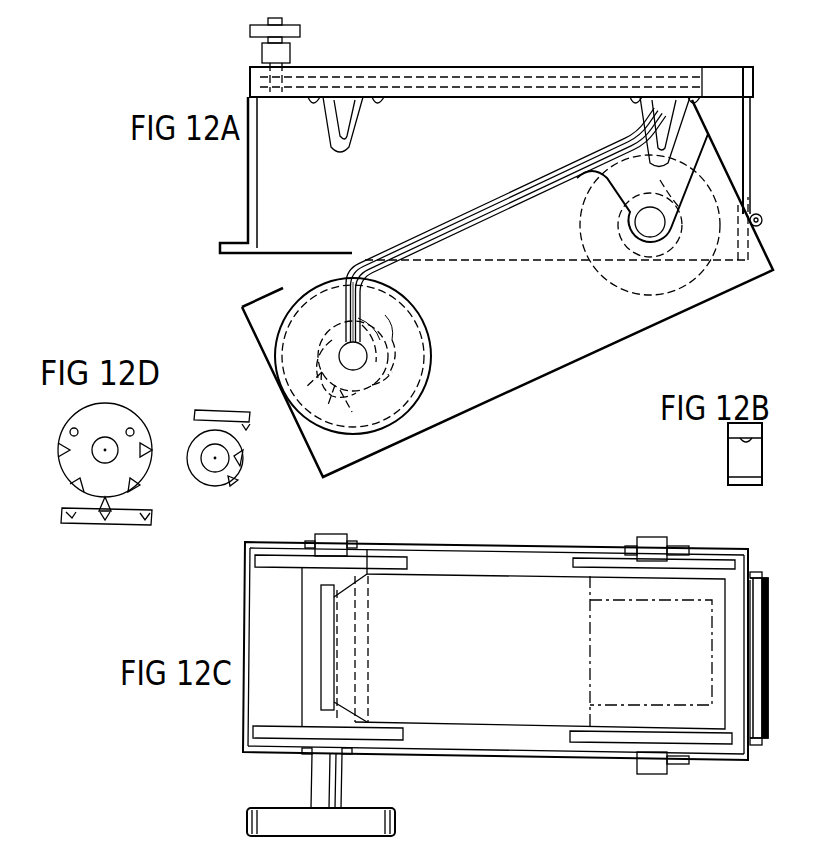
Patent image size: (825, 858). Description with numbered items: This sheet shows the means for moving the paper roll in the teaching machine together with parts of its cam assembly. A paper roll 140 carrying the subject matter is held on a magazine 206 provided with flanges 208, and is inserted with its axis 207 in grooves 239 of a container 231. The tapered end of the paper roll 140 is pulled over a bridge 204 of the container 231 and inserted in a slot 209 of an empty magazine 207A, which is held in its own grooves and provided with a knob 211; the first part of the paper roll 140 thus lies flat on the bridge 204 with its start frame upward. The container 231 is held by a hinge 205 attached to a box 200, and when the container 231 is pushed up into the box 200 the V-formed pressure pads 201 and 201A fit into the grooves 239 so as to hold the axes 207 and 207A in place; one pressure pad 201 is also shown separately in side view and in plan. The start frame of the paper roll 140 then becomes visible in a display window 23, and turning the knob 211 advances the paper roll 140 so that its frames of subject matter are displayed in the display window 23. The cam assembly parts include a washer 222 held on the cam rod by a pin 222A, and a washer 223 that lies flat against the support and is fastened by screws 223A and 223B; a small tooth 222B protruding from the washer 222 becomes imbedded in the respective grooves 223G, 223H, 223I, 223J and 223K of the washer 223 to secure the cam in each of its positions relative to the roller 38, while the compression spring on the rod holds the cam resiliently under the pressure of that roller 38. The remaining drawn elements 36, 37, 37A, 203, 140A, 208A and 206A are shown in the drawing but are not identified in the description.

In FIG. 12A, the upper beam 36 is at (400, 78).
In FIG. 12A, the display window 23 is at (652, 80).
In FIG. 12A, the box 200 is at (247, 203).
In FIG. 12A, the screw head 37 is at (282, 20).
In FIG. 12A, the roller 38 is at (292, 34).
In FIG. 12A, the screw nut 37A is at (290, 53).
In FIG. 12A, the pressure pad 201 is at (356, 152).
In FIG. 12B, the pressure pad 201 is at (728, 465).
In FIG. 12A, the pressure pad 201A is at (637, 112).
In FIG. 12A, the bracket lug 203 is at (384, 104).
In FIG. 12B, the bracket lug 203 is at (738, 445).
In FIG. 12A, the paper roll 140 is at (492, 208).
In FIG. 12C, the paper roll 140 is at (526, 576).
In FIG. 12A, the tube lower end 140A is at (342, 272).
In FIG. 12A, the container 231 is at (510, 370).
In FIG. 12C, the container 231 is at (502, 556).
In FIG. 12A, the bridge 204 is at (488, 210).
In FIG. 12C, the bridge 204 is at (446, 560).
In FIG. 12A, the flanges 208 is at (582, 220).
In FIG. 12C, the flanges 208 is at (736, 566).
In FIG. 12A, the roller 208A is at (430, 338).
In FIG. 12A, the knob 211 is at (398, 286).
In FIG. 12C, the knob 211 is at (300, 800).
In FIG. 12A, the slot 209 is at (338, 335).
In FIG. 12C, the slot 209 is at (320, 592).
In FIG. 12A, the magazine 206 is at (672, 236).
In FIG. 12A, the inner roller 206A is at (326, 392).
In FIG. 12C, the inner roller 206A is at (316, 644).
In FIG. 12A, the axis 207 is at (652, 210).
In FIG. 12C, the axis 207 is at (640, 542).
In FIG. 12A, the empty magazine 207A is at (404, 385).
In FIG. 12C, the empty magazine 207A is at (346, 548).
In FIG. 12A, the grooves 239 is at (690, 200).
In FIG. 12C, the grooves 239 is at (674, 554).
In FIG. 12A, the hinge 205 is at (762, 224).
In FIG. 12C, the hinge 205 is at (770, 648).
In FIG. 12D, the washer 222 is at (188, 452).
In FIG. 12D, the pin 222A is at (244, 456).
In FIG. 12D, the small tooth 222B is at (248, 422).
In FIG. 12D, the washer 223 is at (136, 425).
In FIG. 12D, the screw 223A is at (68, 431).
In FIG. 12D, the screw 223B is at (126, 432).
In FIG. 12D, the groove 223G is at (60, 450).
In FIG. 12D, the groove 223H is at (70, 486).
In FIG. 12D, the groove 223I is at (96, 500).
In FIG. 12D, the groove 223J is at (150, 515).
In FIG. 12D, the groove 223K is at (155, 470).